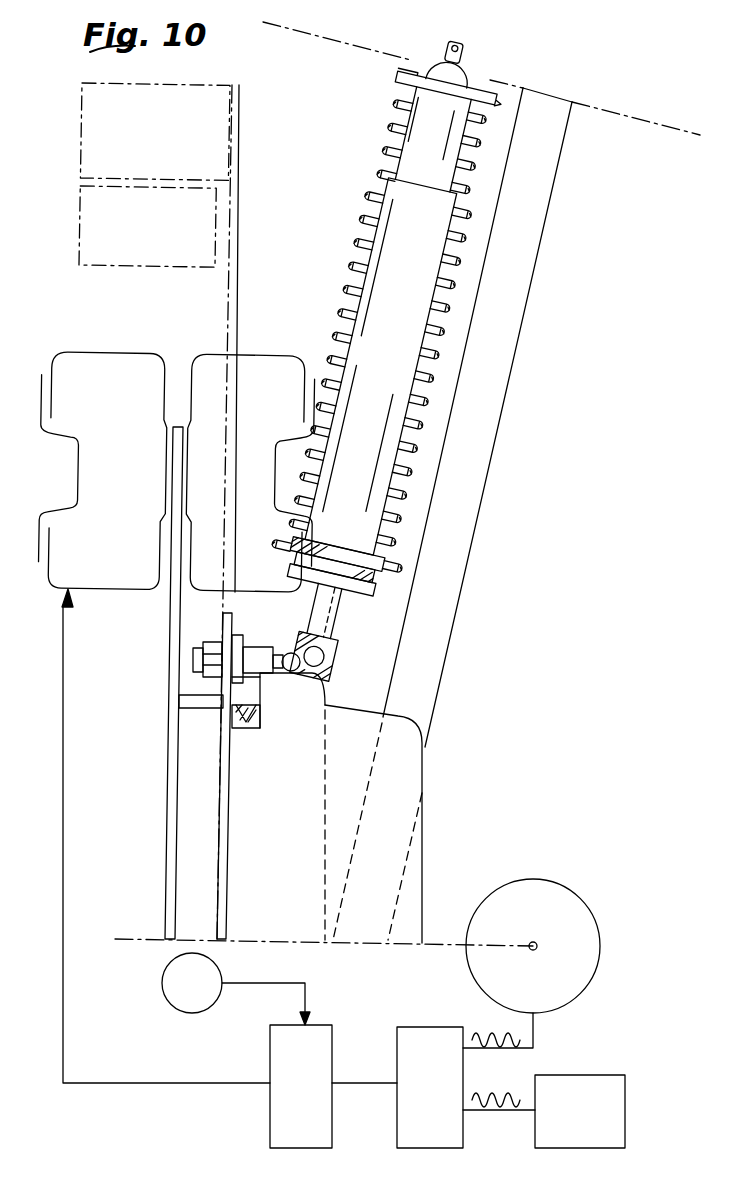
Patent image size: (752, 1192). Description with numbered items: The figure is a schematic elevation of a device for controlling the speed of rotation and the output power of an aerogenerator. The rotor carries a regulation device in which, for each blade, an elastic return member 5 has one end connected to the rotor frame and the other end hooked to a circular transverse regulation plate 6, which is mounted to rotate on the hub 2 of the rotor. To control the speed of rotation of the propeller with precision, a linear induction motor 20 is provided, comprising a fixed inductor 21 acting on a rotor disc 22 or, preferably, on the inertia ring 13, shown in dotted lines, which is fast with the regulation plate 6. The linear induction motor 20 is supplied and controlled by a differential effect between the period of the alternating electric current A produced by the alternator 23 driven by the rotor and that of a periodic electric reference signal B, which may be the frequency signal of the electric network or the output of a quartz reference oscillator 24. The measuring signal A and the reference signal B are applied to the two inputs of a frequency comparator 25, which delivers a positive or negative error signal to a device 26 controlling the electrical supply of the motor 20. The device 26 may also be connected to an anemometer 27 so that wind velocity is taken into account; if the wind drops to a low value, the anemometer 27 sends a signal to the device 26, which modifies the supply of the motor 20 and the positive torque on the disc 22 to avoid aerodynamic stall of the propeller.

The hub of the rotor 2 is at (403, 767).
The elastic return member 5 is at (403, 378).
The regulation plate 6 is at (227, 764).
The inertia ring 13 is at (82, 153).
The linear induction motor 20 is at (159, 428).
The fixed inductor 21 is at (88, 477).
The rotor disc 22 is at (170, 627).
The alternator 23 is at (580, 917).
The quartz reference oscillator 24 is at (602, 1093).
The frequency comparator 25 is at (410, 1111).
The device controlling the electrical supply 26 is at (280, 1107).
The anemometer 27 is at (189, 1013).
The alternating electric current A is at (533, 1033).
The periodic electric reference signal B is at (507, 1090).